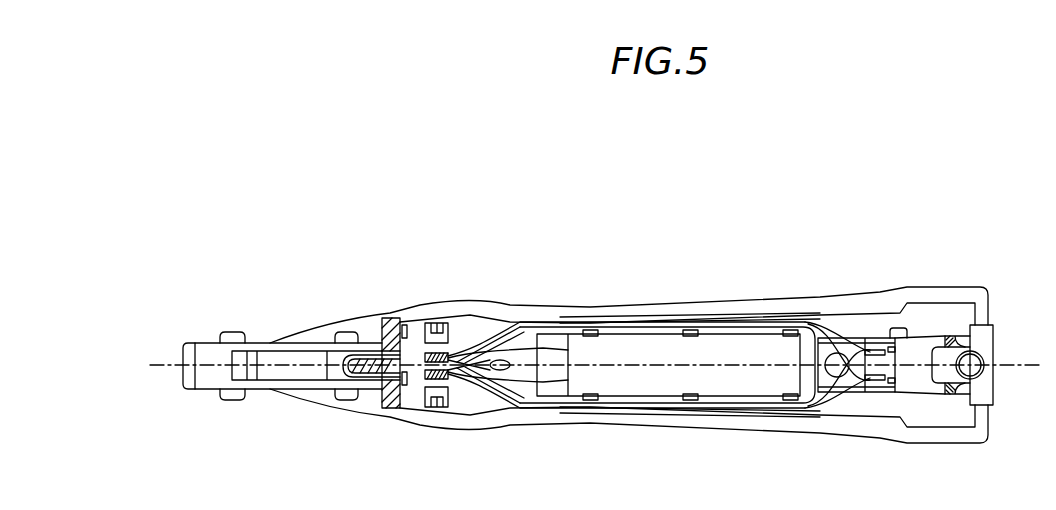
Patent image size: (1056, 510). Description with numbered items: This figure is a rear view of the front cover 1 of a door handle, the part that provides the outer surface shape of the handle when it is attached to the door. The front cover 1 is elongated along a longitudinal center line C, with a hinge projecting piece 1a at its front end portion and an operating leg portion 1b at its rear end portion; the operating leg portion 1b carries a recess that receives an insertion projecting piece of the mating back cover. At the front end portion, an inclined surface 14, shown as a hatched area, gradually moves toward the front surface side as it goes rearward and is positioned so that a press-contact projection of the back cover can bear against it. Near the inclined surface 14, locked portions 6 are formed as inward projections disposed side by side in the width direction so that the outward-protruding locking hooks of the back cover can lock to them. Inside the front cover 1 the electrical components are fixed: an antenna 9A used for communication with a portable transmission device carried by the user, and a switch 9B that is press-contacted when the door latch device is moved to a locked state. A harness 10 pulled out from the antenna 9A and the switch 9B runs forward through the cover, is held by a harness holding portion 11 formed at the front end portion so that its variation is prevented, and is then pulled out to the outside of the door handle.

The front cover 1 is at (848, 279).
The hinge projecting piece 1a is at (262, 390).
The operating leg portion 1b is at (988, 341).
The locked portions 6 is at (433, 322).
The antenna 9A is at (630, 355).
The switch 9B is at (920, 352).
The harness 10 is at (483, 338).
The harness holding portion 11 is at (416, 390).
The inclined surface 14 is at (388, 318).
The longitudinal center line C is at (1018, 367).